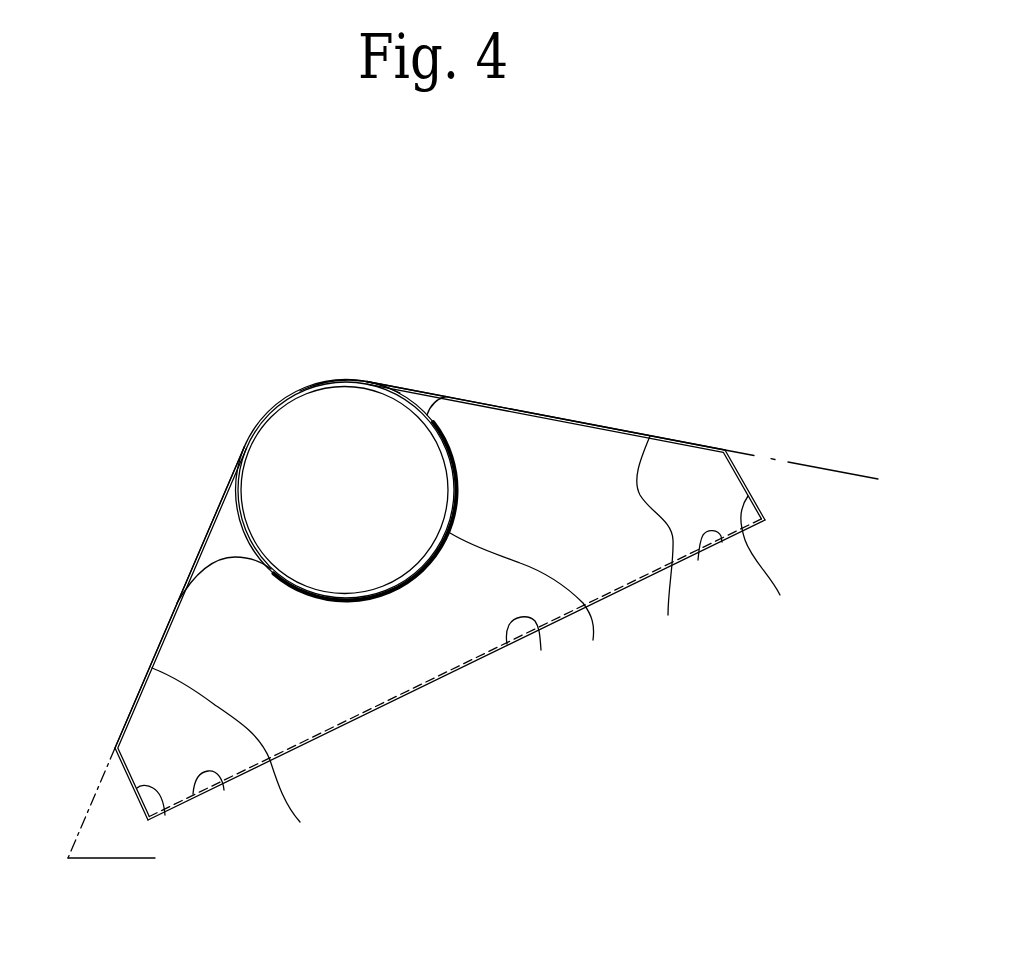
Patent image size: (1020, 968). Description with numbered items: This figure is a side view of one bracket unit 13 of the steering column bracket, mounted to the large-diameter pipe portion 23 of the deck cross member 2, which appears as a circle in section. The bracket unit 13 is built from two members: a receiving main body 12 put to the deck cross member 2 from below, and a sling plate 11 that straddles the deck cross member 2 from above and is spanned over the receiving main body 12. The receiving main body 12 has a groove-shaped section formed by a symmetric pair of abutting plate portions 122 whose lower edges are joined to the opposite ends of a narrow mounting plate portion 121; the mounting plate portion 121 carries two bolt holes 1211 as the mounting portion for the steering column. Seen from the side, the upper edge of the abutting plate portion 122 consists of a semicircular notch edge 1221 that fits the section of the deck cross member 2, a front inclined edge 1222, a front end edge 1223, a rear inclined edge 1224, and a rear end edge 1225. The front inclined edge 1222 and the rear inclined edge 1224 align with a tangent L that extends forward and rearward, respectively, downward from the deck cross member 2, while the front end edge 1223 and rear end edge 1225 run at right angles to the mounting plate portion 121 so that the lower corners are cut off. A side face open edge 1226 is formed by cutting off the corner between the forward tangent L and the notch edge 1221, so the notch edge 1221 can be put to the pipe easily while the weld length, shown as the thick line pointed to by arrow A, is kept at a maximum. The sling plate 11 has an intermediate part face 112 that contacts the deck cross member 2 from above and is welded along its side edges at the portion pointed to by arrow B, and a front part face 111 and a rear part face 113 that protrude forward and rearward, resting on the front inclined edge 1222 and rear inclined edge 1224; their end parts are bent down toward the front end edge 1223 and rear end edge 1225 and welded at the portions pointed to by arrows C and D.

The deck cross member 2 is at (305, 403).
The sling plate 11 is at (190, 563).
The receiving main body 12 is at (400, 660).
The bracket unit 13 is at (360, 692).
The large-diameter pipe portion 23 is at (242, 462).
The front part face 111 is at (167, 627).
The intermediate part face 112 is at (343, 379).
The rear part face 113 is at (462, 399).
The mounting plate portion 121 is at (541, 650).
The abutting plate portion 122 is at (617, 529).
The bolt hole 1211 is at (698, 560).
The notch edge 1221 is at (593, 640).
The front inclined edge 1222 is at (300, 822).
The front end edge 1223 is at (165, 815).
The rear inclined edge 1224 is at (668, 615).
The rear end edge 1225 is at (780, 595).
The side face open edge 1226 is at (227, 558).
The arrow A is at (405, 585).
The arrow B is at (262, 415).
The arrow C is at (143, 682).
The arrow D is at (620, 428).
The tangent L is at (877, 462).